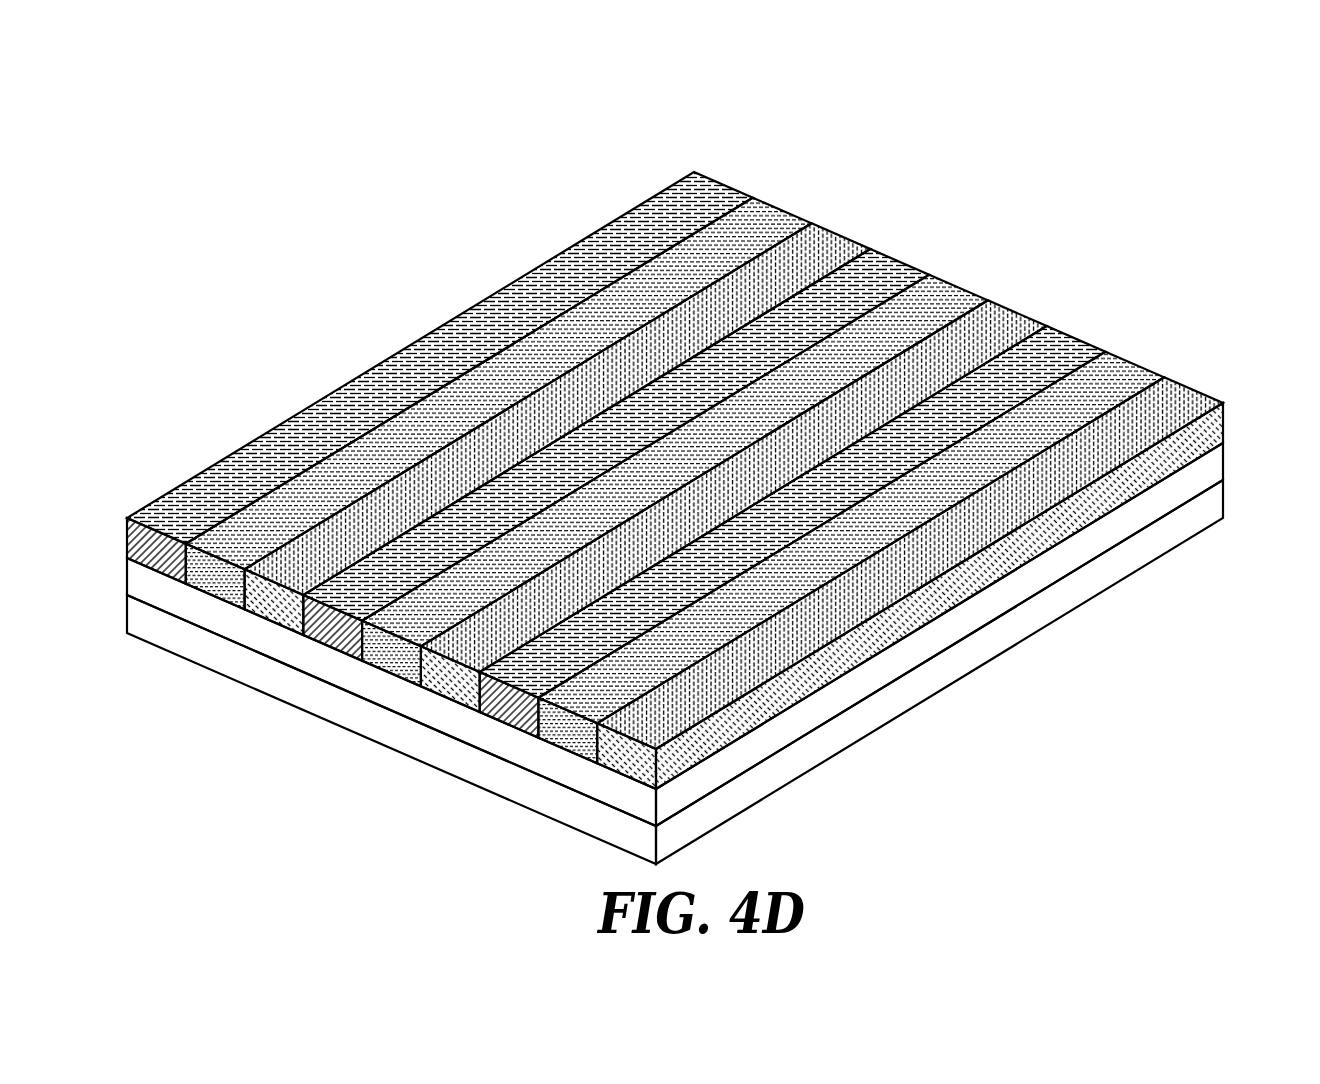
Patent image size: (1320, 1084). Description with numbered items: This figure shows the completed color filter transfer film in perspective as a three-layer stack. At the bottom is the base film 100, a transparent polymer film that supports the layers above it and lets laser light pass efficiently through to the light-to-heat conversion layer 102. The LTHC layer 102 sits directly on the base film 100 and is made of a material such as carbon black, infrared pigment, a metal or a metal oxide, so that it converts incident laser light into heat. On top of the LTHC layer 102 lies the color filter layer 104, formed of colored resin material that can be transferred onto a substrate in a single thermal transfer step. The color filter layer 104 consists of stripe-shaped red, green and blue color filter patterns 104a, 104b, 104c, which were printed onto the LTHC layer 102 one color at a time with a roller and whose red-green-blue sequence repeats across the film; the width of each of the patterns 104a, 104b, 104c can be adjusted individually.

The base film 100 is at (827, 742).
The light-to-heat conversion (LTHC) layer 102 is at (903, 653).
The color filter layer 104 is at (703, 426).
The first color filter pattern 104a is at (712, 198).
The second color filter pattern 104b is at (771, 222).
The third color filter pattern 104c is at (830, 247).